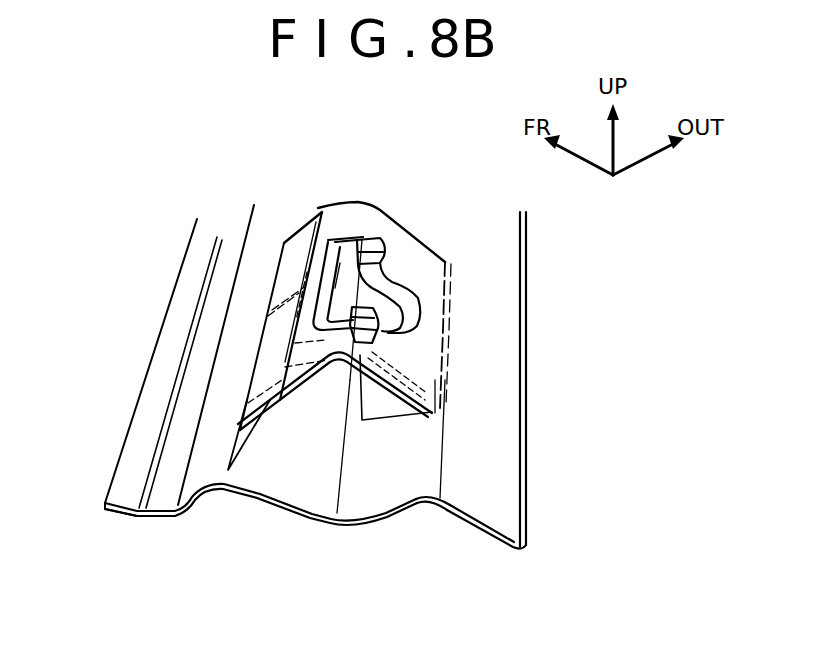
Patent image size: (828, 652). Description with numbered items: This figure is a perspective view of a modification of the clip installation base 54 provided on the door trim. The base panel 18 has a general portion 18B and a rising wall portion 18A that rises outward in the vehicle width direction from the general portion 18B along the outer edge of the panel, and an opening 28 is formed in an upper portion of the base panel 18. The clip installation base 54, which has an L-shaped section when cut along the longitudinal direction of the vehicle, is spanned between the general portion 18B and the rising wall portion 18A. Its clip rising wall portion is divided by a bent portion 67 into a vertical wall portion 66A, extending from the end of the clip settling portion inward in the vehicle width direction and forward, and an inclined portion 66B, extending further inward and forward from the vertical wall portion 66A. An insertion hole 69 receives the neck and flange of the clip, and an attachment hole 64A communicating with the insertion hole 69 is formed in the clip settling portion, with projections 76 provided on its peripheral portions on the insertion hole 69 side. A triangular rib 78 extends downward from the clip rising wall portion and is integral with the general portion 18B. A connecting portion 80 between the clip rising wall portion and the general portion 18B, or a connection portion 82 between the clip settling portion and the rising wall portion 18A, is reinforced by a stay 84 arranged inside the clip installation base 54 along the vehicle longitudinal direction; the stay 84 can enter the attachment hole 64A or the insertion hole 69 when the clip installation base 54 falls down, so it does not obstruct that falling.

The base panel 18 is at (534, 413).
The rising wall portion 18A is at (418, 508).
The general portion 18B is at (205, 478).
The opening 28 is at (127, 442).
The clip installation base 54 is at (312, 405).
The attachment hole 64A is at (390, 280).
The vertical wall portion 66A is at (347, 228).
The inclined portion 66B is at (300, 242).
The bent portion 67 is at (307, 272).
The insertion hole 69 is at (347, 236).
The projections 76 is at (360, 232).
The rib 78 is at (250, 433).
The connecting portion 80 is at (257, 347).
The connection portion 82 is at (437, 358).
The stay 84 is at (380, 407).